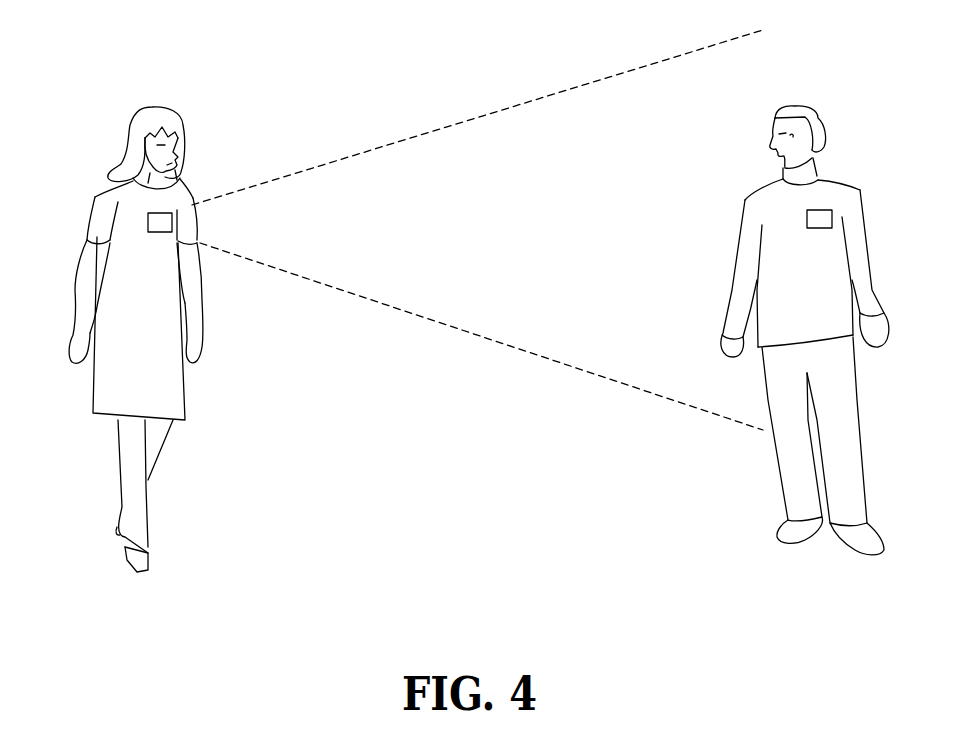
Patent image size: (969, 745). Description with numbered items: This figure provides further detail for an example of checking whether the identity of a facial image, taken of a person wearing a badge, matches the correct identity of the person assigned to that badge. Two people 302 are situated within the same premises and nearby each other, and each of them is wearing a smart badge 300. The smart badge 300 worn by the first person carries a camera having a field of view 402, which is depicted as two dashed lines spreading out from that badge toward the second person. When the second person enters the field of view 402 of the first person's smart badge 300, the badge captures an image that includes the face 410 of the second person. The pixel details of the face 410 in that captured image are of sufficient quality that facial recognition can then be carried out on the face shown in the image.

The smart badge 300 is at (881, 190).
The person 302 is at (797, 107).
The field of view 402 is at (353, 155).
The face 410 is at (755, 147).